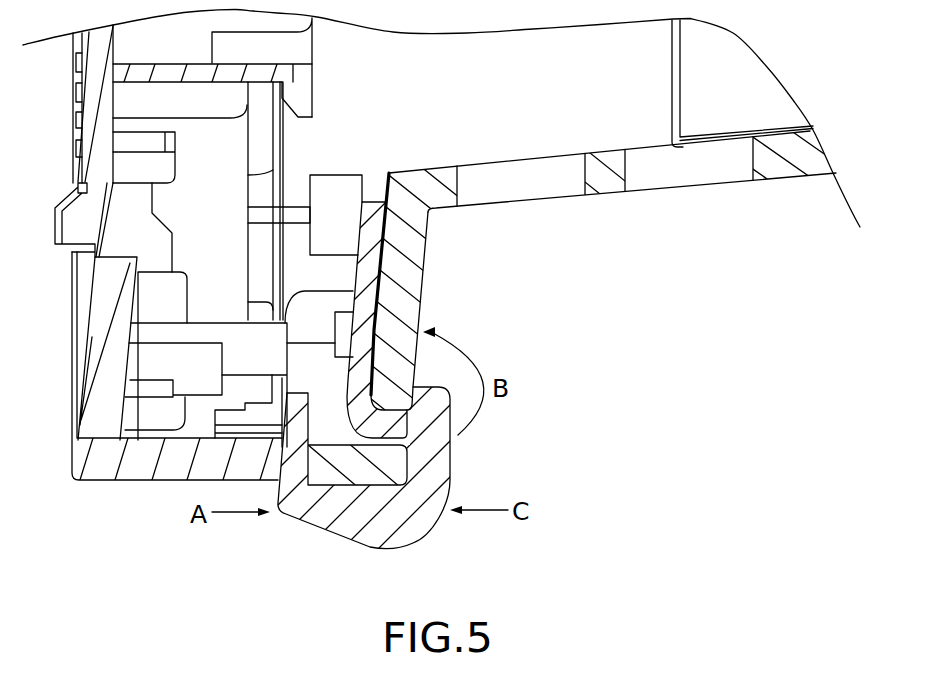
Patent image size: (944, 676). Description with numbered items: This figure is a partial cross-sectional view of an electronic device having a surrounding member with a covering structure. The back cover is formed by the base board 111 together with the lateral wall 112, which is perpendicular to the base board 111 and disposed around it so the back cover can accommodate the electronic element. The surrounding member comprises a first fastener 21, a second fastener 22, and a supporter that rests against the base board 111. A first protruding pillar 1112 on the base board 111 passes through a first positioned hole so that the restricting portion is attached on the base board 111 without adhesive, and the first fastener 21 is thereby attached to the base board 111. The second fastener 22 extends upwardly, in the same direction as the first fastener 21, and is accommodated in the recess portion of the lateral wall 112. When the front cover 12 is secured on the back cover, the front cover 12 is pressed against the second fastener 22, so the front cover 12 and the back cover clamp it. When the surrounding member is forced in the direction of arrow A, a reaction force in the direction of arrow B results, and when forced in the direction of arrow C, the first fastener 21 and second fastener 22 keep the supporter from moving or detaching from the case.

The front cover 12 is at (102, 400).
The first fastener 21 is at (372, 242).
The second fastener 22 is at (298, 420).
The base board 111 is at (402, 270).
The lateral wall 112 is at (370, 465).
The first protruding pillar 1112 is at (343, 327).